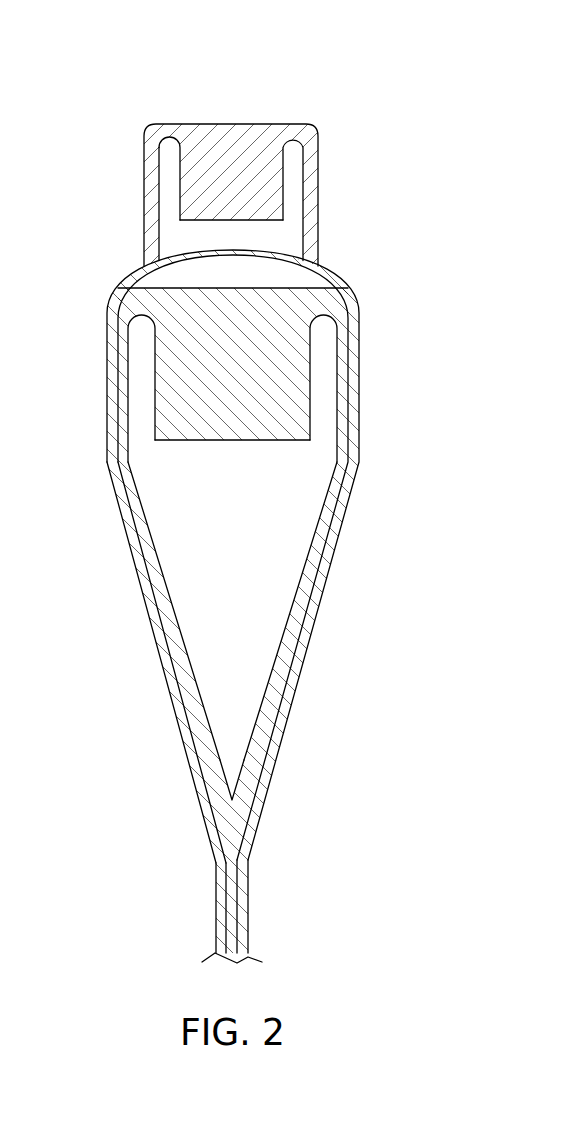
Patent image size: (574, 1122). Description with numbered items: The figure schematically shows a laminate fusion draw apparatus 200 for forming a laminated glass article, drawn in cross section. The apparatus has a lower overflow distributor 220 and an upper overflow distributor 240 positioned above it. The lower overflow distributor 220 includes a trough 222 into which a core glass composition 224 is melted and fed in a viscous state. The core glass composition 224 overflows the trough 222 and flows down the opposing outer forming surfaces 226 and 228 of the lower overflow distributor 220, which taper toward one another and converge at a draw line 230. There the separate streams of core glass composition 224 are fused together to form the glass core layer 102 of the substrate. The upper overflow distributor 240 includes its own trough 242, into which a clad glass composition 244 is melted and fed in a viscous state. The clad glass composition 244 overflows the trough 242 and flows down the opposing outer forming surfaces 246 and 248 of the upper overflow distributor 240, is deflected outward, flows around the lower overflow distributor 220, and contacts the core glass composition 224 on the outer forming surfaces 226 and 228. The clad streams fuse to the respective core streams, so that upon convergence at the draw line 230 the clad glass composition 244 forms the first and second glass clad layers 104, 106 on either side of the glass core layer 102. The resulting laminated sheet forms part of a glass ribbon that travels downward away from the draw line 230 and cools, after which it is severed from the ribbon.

The laminate fusion draw apparatus 200 is at (357, 103).
The upper overflow distributor 240 is at (297, 141).
The clad glass composition 244 is at (228, 130).
The trough 242 is at (180, 183).
The outer forming surface 248 is at (298, 205).
The outer forming surface 246 is at (160, 230).
The lower overflow distributor 220 is at (325, 357).
The core glass composition 224 is at (248, 315).
The trough 222 is at (153, 392).
The outer forming surface 226 is at (143, 513).
The outer forming surface 228 is at (313, 536).
The draw line 230 is at (238, 802).
The glass core layer 102 is at (227, 862).
The first glass clad layer 104 is at (216, 912).
The second glass clad layer 106 is at (250, 908).